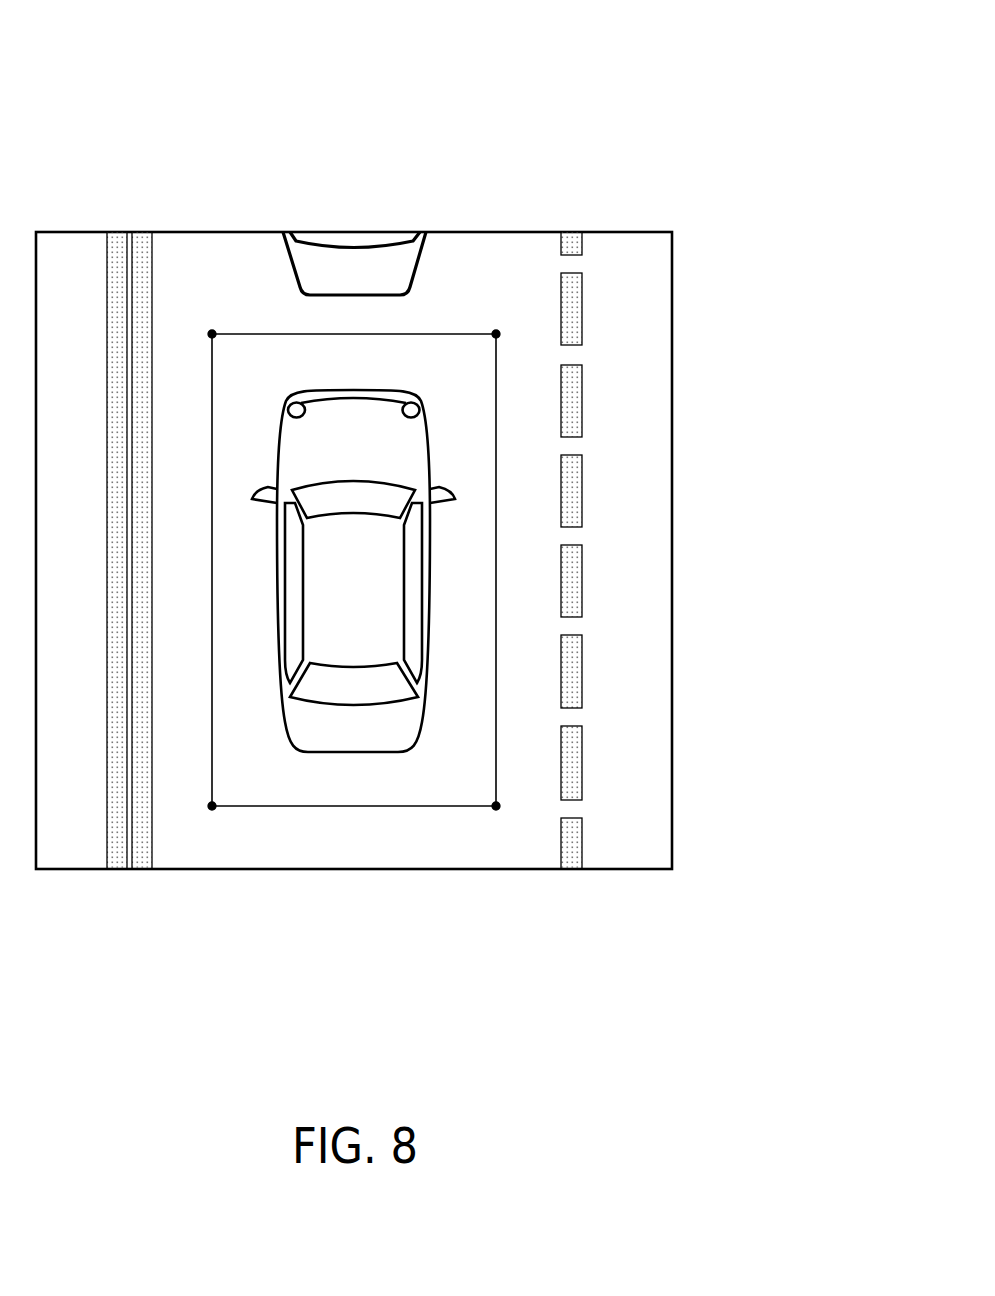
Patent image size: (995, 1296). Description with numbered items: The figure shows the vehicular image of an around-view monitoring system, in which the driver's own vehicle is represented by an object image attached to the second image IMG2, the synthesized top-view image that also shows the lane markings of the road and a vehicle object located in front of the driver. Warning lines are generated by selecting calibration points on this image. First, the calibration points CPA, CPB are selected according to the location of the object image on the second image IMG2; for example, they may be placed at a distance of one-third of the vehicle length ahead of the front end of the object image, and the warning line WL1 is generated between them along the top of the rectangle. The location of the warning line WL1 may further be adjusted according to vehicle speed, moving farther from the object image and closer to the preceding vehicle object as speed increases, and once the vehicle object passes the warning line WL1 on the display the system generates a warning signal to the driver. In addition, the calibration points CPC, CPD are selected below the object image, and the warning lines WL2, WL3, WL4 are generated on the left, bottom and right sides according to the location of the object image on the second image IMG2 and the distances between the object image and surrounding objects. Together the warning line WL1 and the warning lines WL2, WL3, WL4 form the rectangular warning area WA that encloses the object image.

The second image IMG2 is at (672, 315).
The warning area WA is at (297, 345).
The warning line WL1 is at (334, 334).
The warning line WL2 is at (212, 571).
The warning line WL3 is at (355, 810).
The warning line WL4 is at (496, 571).
The calibration point CPA is at (208, 318).
The calibration point CPB is at (499, 318).
The calibration point CPC is at (209, 821).
The calibration point CPD is at (500, 821).